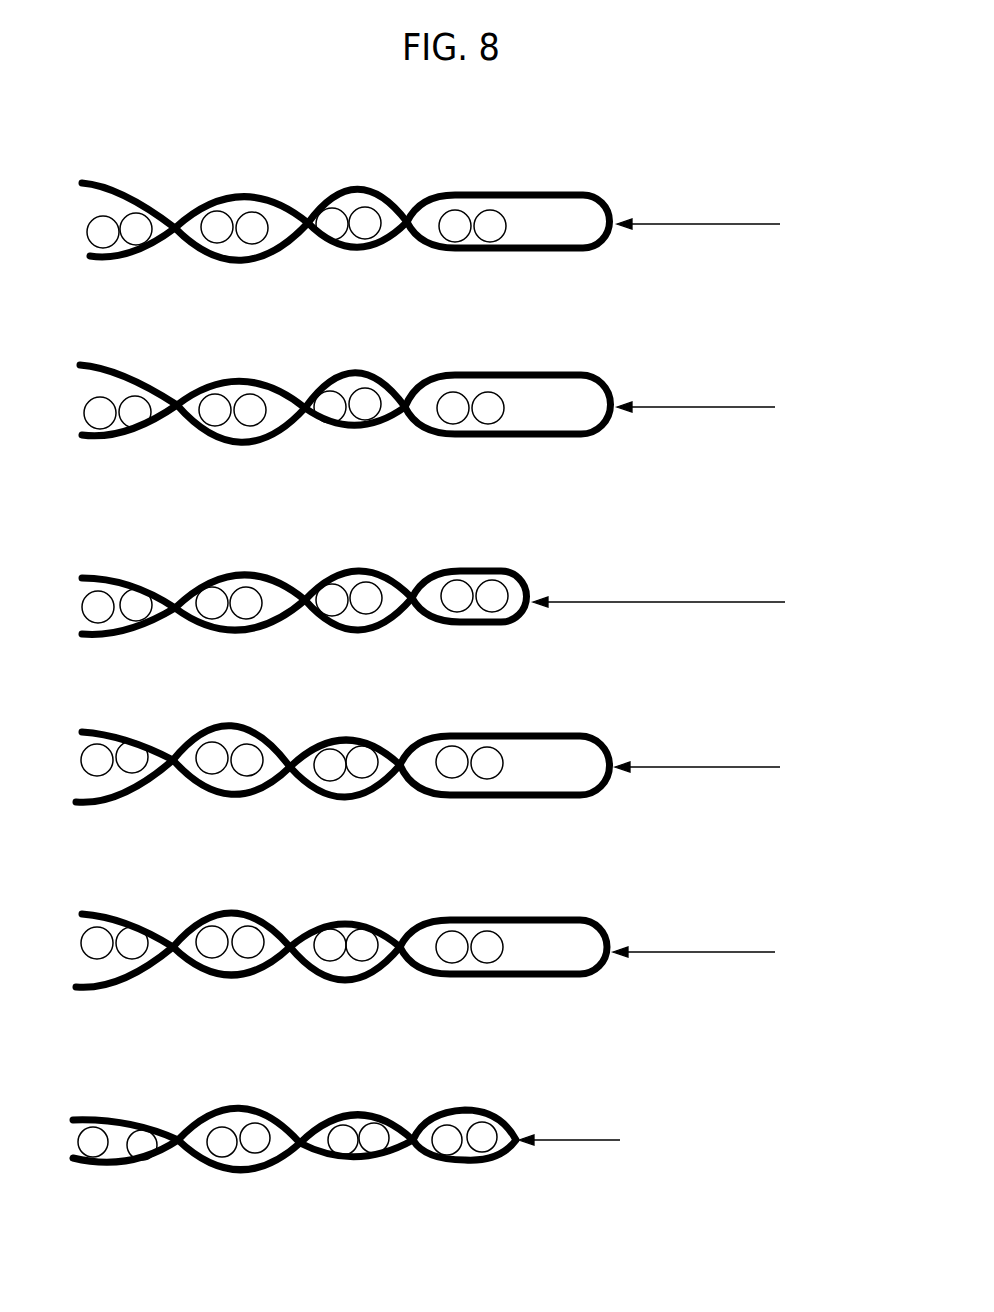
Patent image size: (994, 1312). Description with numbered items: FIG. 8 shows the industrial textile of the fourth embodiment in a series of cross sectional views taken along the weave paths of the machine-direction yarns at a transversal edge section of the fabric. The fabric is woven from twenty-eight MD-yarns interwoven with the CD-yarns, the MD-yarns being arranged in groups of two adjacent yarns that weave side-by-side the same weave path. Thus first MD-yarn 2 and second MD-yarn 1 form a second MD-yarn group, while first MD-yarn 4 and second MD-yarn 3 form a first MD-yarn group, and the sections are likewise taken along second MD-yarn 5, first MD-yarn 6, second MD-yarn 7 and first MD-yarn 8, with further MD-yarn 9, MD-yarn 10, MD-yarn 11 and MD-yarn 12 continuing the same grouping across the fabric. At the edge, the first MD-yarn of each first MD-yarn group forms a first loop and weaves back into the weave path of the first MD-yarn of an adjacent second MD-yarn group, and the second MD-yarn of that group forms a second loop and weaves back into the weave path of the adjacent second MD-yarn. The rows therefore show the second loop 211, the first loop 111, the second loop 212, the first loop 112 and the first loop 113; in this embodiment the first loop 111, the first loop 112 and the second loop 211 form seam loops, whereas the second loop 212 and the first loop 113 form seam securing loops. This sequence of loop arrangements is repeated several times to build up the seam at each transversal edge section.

The second MD-yarn 1 is at (128, 188).
The first MD-yarn 2 is at (135, 373).
The second MD-yarn 3 is at (596, 190).
The first MD-yarn 4 is at (597, 373).
The second MD-yarn 5 is at (210, 570).
The first MD-yarn 6 is at (225, 725).
The second MD-yarn 7 is at (480, 565).
The first MD-yarn 8 is at (600, 735).
The MD-yarn 9 is at (175, 947).
The MD-yarn 10 is at (197, 1118).
The MD-yarn 11 is at (548, 915).
The MD-yarn 12 is at (495, 1115).
The second loop 211 is at (723, 219).
The first loop 111 is at (730, 405).
The second loop 212 is at (688, 602).
The first loop 112 is at (732, 777).
The first loop 113 is at (614, 1152).